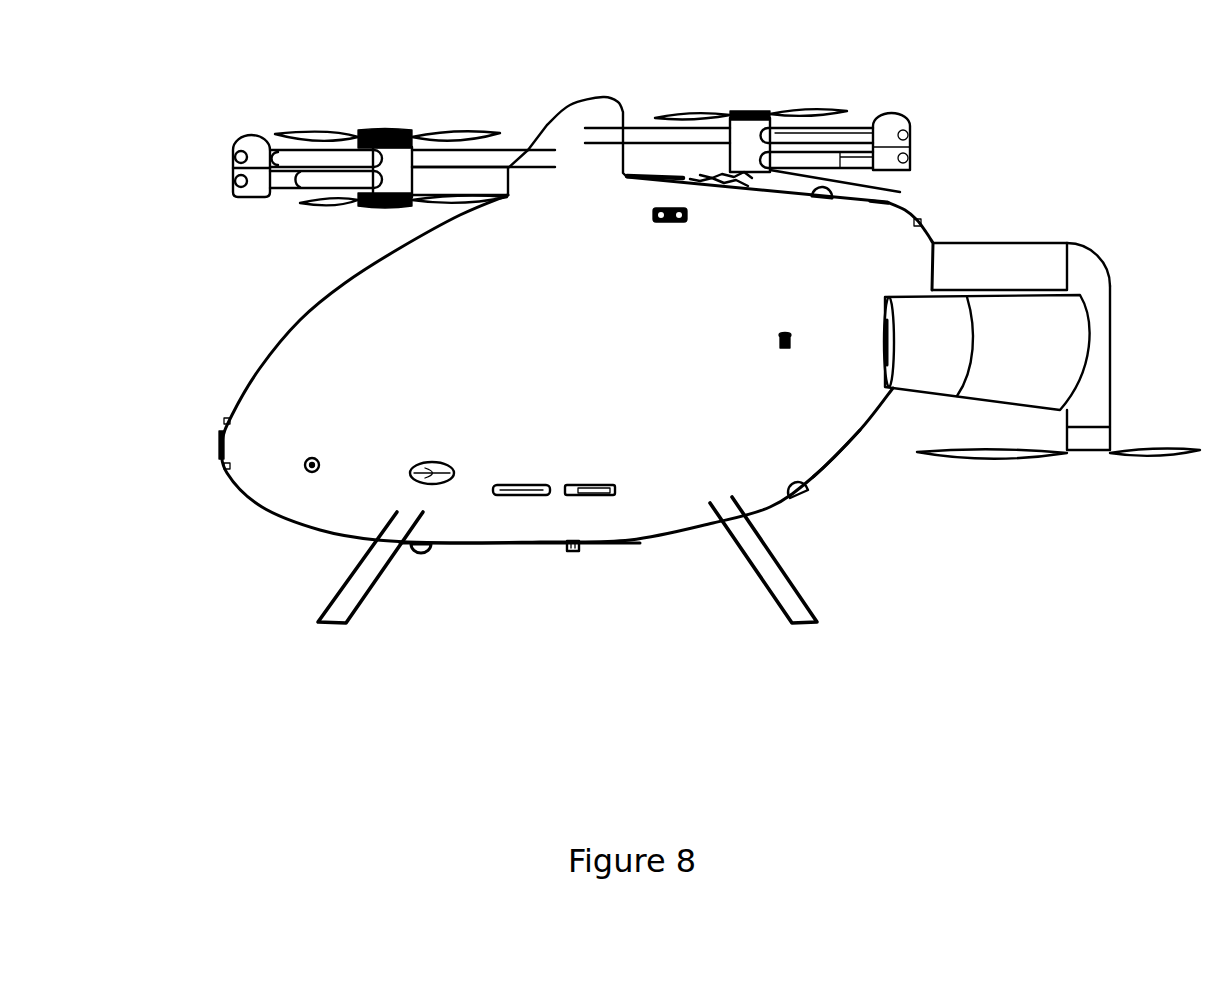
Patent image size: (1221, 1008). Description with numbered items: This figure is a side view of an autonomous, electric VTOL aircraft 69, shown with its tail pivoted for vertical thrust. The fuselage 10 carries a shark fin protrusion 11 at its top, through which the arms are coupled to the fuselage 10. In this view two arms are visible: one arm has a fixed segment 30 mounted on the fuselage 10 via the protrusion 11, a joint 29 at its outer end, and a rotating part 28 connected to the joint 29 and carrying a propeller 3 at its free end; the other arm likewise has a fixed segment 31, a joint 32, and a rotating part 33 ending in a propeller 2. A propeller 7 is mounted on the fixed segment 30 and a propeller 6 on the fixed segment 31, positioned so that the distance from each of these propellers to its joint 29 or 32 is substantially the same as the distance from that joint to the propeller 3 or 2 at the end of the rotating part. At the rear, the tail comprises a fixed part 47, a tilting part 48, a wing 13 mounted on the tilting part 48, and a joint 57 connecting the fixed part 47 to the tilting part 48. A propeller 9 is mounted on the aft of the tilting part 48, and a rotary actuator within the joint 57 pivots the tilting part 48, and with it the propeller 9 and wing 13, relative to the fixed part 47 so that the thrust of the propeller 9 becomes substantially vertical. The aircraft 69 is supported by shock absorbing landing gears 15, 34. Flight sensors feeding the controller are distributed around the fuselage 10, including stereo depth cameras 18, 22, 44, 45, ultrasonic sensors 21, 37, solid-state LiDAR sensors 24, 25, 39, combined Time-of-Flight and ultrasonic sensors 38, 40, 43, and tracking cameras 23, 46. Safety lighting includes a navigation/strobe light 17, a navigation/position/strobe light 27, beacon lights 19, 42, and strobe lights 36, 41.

The propeller 2 is at (715, 170).
The propeller 3 is at (372, 203).
The propeller 6 is at (727, 112).
The propeller 7 is at (362, 135).
The propeller 9 is at (1120, 460).
The fuselage 10 is at (272, 392).
The shark fin protrusion 11 is at (568, 130).
The wing 13 is at (995, 366).
The shock absorbing landing gear 15 is at (345, 612).
The navigation/strobe light 17 is at (435, 466).
The stereo depth camera 18 is at (470, 545).
The beacon light 19 is at (421, 553).
The ultrasonic sensor 21 is at (305, 475).
The stereo depth camera 22 is at (224, 420).
The tracking camera 23 is at (224, 466).
The solid-state LiDAR sensor 24 is at (220, 438).
The solid-state LiDAR sensor 25 is at (574, 553).
The navigation/position/strobe light 27 is at (880, 332).
The rotating part 28 is at (295, 183).
The joint 29 is at (246, 152).
The fixed segment 30 is at (288, 158).
The fixed segment 31 is at (853, 135).
The joint 32 is at (890, 133).
The rotating part 33 is at (817, 157).
The shock absorbing landing gear 34 is at (795, 612).
The strobe light 36 is at (800, 495).
The ultrasonic sensor 37 is at (848, 452).
The combined Time-of-Flight and ultrasonic sensor 38 is at (773, 338).
The solid-state LiDAR sensor 39 is at (660, 222).
The combined Time-of-Flight and ultrasonic sensor 40 is at (643, 180).
The strobe light 41 is at (692, 182).
The beacon light 42 is at (820, 197).
The combined Time-of-Flight and ultrasonic sensor 43 is at (878, 204).
The stereo depth camera 44 is at (917, 227).
The stereo depth camera 45 is at (533, 485).
The tracking camera 46 is at (595, 487).
The fixed part 47 is at (1017, 263).
The tilting part 48 is at (1098, 372).
The joint 57 is at (1083, 262).
The VTOL aircraft 69 is at (1045, 665).